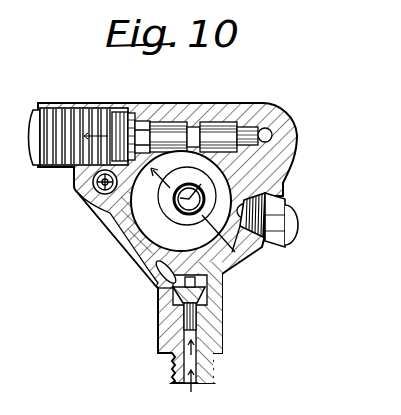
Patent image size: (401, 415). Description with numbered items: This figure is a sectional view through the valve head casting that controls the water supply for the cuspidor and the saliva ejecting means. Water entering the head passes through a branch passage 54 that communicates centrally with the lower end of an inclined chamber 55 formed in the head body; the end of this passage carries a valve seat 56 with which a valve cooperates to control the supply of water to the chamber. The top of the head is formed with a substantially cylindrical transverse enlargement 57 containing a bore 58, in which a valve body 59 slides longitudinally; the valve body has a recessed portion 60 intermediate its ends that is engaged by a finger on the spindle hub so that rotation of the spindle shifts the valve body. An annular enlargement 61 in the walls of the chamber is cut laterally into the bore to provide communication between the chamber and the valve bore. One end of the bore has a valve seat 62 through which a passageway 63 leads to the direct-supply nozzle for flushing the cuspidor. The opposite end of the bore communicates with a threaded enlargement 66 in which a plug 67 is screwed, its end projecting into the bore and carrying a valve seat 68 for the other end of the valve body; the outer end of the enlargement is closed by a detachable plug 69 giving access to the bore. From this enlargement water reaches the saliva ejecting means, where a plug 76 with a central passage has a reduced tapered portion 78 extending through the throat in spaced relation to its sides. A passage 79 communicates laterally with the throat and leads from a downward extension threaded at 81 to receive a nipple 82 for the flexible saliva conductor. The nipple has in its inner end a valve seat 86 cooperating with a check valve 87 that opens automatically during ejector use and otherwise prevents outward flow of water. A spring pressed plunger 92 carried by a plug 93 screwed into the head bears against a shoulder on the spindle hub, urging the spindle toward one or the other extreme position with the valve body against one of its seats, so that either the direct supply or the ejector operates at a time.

The branch passage 54 is at (205, 170).
The inclined chamber 55 is at (229, 264).
The valve seat 56 is at (241, 248).
The cylindrical transverse enlargement 57 is at (60, 112).
The bore 58 is at (157, 126).
The valve body 59 is at (230, 125).
The recessed portion 60 is at (203, 125).
The annular enlargement 61 is at (266, 183).
The valve seat 62 is at (250, 102).
The passageway 63 is at (284, 116).
The threaded enlargement 66 is at (98, 113).
The plug 67 is at (125, 115).
The valve seat 68 is at (141, 128).
The plug 69 is at (28, 117).
The plug 76 is at (93, 183).
The reduced tapered portion 78 is at (97, 199).
The passage 79 is at (163, 283).
The internally threaded portion 81 is at (167, 320).
The nipple 82 is at (170, 367).
The valve seat 86 is at (212, 300).
The check valve 87 is at (172, 303).
The spring pressed plunger 92 is at (235, 205).
The plug 93 is at (291, 229).